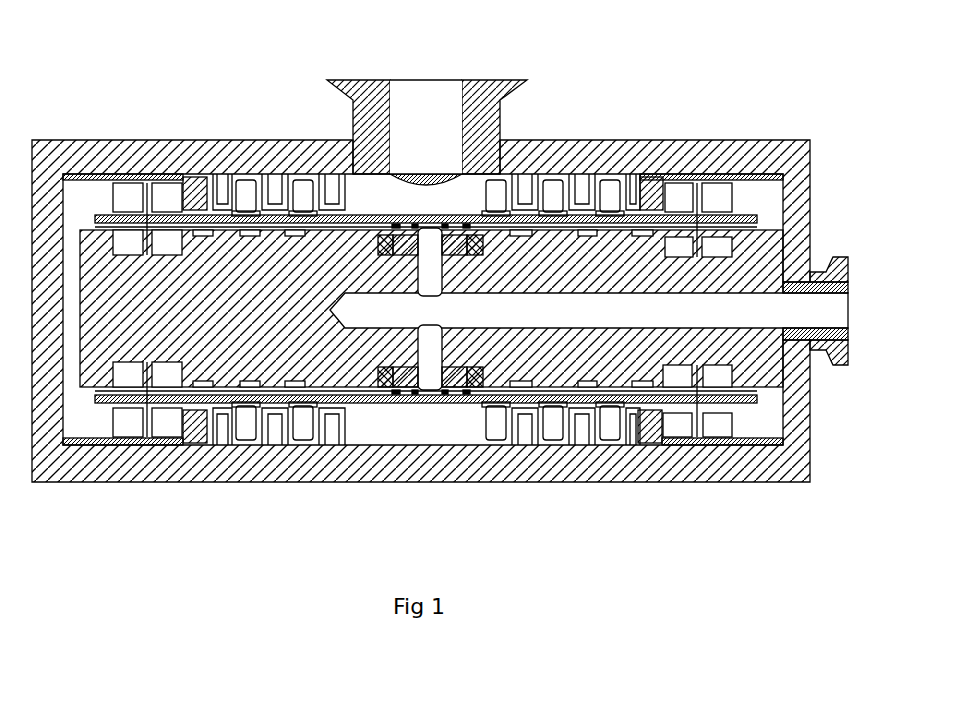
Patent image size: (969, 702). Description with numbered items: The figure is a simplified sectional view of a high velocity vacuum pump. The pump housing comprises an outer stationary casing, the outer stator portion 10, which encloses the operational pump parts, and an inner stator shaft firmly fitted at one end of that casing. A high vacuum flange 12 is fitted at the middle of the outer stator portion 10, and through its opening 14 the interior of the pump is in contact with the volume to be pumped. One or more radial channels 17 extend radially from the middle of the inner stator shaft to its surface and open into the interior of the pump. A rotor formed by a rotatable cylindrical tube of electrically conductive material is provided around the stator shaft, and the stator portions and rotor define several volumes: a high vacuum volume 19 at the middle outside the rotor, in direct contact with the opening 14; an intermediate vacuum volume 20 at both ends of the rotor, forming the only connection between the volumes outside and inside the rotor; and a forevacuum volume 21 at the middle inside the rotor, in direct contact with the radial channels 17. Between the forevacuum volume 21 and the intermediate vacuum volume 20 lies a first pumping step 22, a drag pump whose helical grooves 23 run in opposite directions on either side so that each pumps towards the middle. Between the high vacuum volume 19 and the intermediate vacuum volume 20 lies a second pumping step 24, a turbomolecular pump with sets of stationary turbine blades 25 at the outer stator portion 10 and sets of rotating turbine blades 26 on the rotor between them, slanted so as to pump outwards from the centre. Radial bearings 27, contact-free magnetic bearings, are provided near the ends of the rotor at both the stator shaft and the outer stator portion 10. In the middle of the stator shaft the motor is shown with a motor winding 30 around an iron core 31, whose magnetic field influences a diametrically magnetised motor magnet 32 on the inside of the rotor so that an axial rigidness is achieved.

The outer stator portion 10 is at (583, 150).
The high vacuum flange 12 is at (483, 102).
The opening 14 is at (422, 107).
The radial channel 17 is at (435, 275).
The high vacuum volume 19 is at (450, 425).
The intermediate vacuum volume 20 is at (97, 200).
The forevacuum volume 21 is at (432, 228).
The first pumping step 22 is at (190, 388).
The helical grooves 23 is at (252, 237).
The second pumping step 24 is at (287, 417).
The stationary turbine blades 25 is at (327, 432).
The rotating turbine blades 26 is at (362, 425).
The radial bearings 27 is at (720, 247).
The motor winding 30 is at (390, 387).
The iron core 31 is at (405, 387).
The motor magnet 32 is at (417, 388).